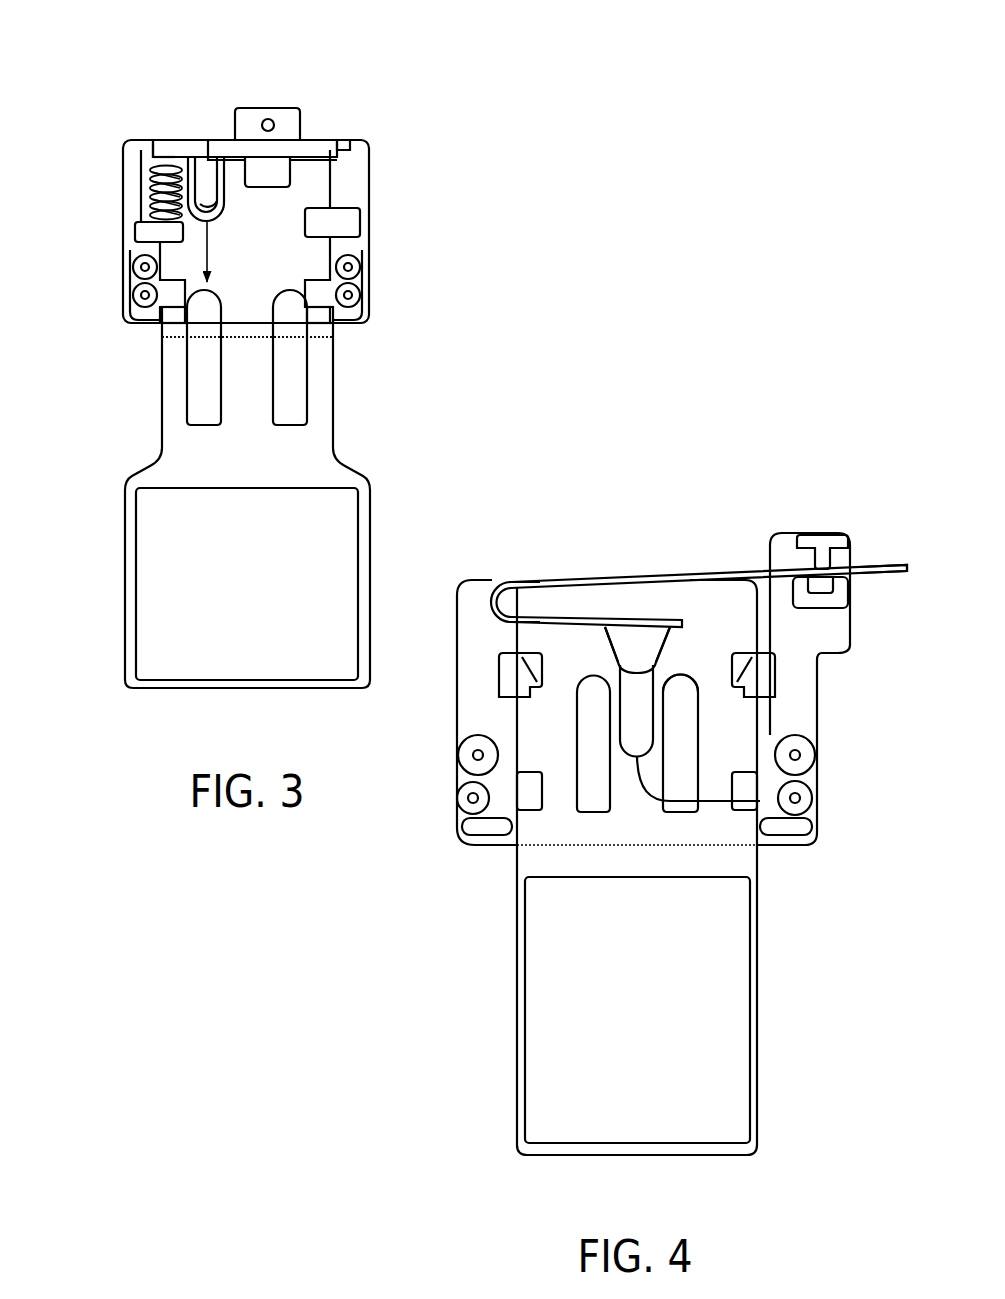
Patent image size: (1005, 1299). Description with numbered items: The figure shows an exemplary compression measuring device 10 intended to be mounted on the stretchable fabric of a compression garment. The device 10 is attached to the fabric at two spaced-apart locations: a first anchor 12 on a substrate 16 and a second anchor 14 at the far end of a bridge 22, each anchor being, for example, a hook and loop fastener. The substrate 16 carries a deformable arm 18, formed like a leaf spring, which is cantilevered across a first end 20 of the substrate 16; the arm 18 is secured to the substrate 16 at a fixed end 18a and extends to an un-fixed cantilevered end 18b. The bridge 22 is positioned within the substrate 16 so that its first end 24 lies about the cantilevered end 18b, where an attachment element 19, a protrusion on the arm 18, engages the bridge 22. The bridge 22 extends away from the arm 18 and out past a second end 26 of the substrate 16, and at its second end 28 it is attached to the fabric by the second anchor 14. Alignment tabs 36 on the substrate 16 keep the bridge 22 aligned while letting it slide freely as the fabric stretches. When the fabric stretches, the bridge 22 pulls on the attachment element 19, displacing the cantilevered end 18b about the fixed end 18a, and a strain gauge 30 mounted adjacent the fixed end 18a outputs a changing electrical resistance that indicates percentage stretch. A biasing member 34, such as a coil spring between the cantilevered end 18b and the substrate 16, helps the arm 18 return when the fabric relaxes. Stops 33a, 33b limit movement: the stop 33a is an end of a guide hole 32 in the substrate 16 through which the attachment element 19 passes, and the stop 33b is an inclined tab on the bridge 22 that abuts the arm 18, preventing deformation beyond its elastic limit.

In FIG. 3, the compression measuring device 10 is at (96, 48).
In FIG. 4, the compression measuring device 10 is at (606, 546).
In FIG. 3, the first anchor 12 is at (106, 214).
In FIG. 4, the first anchor 12 is at (457, 681).
In FIG. 3, the second anchor 14 is at (134, 606).
In FIG. 4, the second anchor 14 is at (521, 1065).
In FIG. 3, the substrate 16 is at (155, 245).
In FIG. 4, the substrate 16 is at (496, 773).
In FIG. 3, the deformable arm 18 is at (205, 150).
In FIG. 4, the deformable arm 18 is at (661, 574).
In FIG. 3, the fixed end 18a is at (326, 142).
In FIG. 4, the fixed end 18a is at (909, 569).
In FIG. 3, the cantilevered end 18b is at (165, 142).
In FIG. 4, the cantilevered end 18b is at (506, 580).
In FIG. 3, the attachment element 19 is at (212, 195).
In FIG. 4, the attachment element 19 is at (642, 637).
In FIG. 3, the first end of the substrate 20 is at (168, 141).
In FIG. 4, the first end of the substrate 20 is at (467, 581).
In FIG. 3, the bridge 22 is at (247, 385).
In FIG. 4, the bridge 22 is at (647, 847).
In FIG. 3, the first end of the bridge 24 is at (238, 177).
In FIG. 4, the first end of the bridge 24 is at (705, 671).
In FIG. 3, the second end of the substrate 26 is at (320, 338).
In FIG. 4, the second end of the substrate 26 is at (485, 847).
In FIG. 3, the second end of the bridge 28 is at (268, 688).
In FIG. 4, the second end of the bridge 28 is at (747, 1160).
In FIG. 3, the strain gauge 30 is at (358, 140).
In FIG. 4, the strain gauge 30 is at (783, 553).
In FIG. 3, the guide hole 32 is at (213, 219).
In FIG. 4, the guide hole 32 is at (640, 735).
In FIG. 3, the stop 33a is at (212, 231).
In FIG. 4, the stop 33a is at (760, 801).
In FIG. 4, the stop 33b is at (682, 707).
In FIG. 3, the biasing member 34 is at (150, 170).
In FIG. 3, the alignment tabs 36 is at (173, 288).
In FIG. 4, the alignment tabs 36 is at (805, 818).